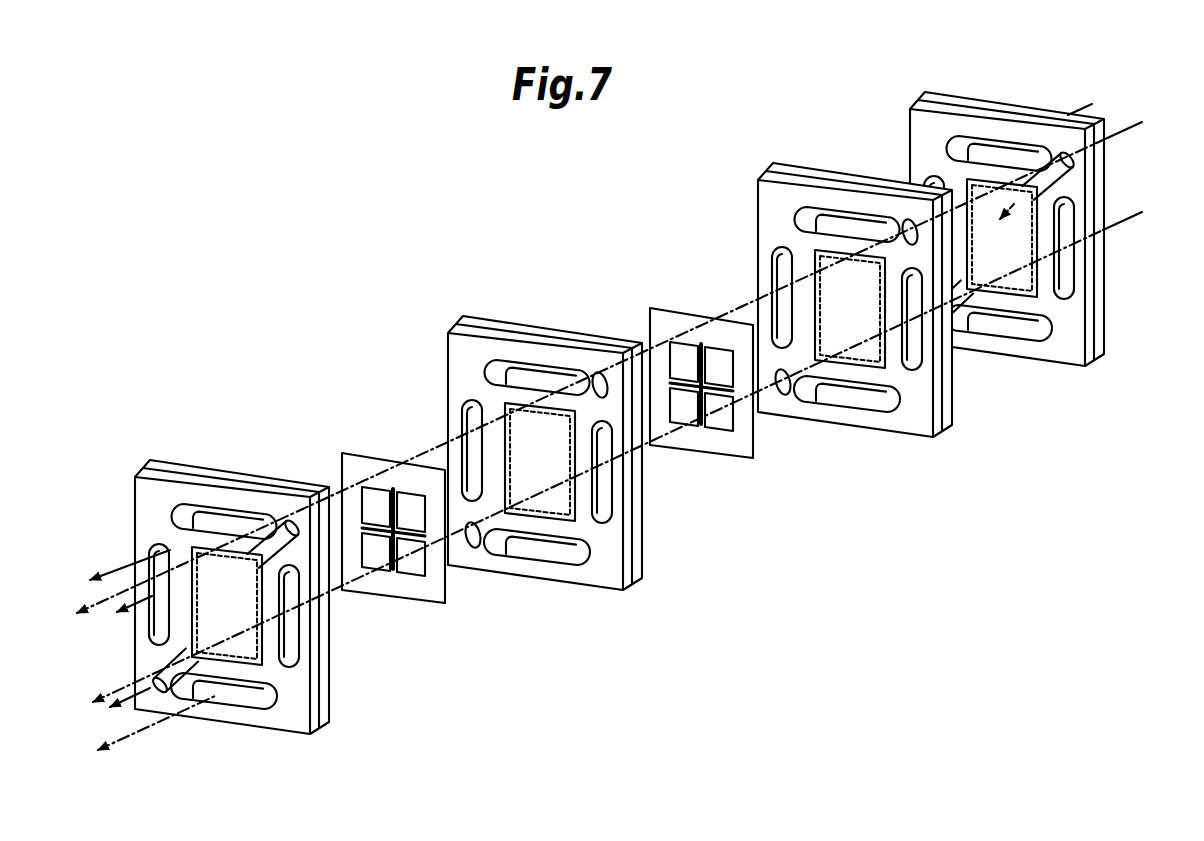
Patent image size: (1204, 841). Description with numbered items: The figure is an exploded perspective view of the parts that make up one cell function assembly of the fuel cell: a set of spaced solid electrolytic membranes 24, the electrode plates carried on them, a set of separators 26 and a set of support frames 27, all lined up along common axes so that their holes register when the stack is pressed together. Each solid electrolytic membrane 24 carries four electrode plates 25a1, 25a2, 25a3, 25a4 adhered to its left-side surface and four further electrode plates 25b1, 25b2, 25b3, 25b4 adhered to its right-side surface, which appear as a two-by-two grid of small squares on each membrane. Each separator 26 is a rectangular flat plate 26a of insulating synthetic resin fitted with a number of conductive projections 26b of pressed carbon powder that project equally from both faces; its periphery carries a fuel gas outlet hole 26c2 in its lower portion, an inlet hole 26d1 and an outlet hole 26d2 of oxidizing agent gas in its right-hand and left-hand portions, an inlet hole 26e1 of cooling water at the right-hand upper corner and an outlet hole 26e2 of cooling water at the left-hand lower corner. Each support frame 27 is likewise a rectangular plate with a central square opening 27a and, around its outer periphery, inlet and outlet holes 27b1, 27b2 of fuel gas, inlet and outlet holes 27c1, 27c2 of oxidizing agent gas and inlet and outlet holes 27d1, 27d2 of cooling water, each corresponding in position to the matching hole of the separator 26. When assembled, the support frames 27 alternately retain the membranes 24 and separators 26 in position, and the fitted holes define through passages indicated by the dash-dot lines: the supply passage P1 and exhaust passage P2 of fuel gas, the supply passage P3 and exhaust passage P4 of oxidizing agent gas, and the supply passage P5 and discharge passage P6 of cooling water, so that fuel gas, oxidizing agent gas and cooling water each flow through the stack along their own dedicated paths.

The solid electrolytic membrane 24 is at (668, 312).
The electrode plate 25a1 is at (672, 350).
The electrode plate 25a2 is at (716, 350).
The electrode plate 25a3 is at (736, 426).
The electrode plate 25a4 is at (679, 420).
The electrode plate 25b1 is at (365, 487).
The electrode plate 25b2 is at (400, 492).
The electrode plate 25b3 is at (428, 577).
The electrode plate 25b4 is at (372, 570).
The separator 26 is at (946, 100).
The flat plate 26a is at (843, 212).
The projection 26b is at (808, 392).
The fuel gas outlet hole 26c2 is at (850, 395).
The inlet hole of oxidizing agent gas 26d1 is at (930, 372).
The outlet hole of oxidizing agent gas 26d2 is at (790, 252).
The inlet hole of cooling water 26e1 is at (291, 520).
The outlet hole of cooling water 26e2 is at (165, 700).
The support frame 27 is at (1085, 368).
The square opening 27a is at (534, 515).
The inlet hole of fuel gas 27b1 is at (521, 364).
The outlet hole of fuel gas 27b2 is at (560, 558).
The inlet hole of oxidizing agent gas 27c1 is at (612, 492).
The outlet hole of oxidizing agent gas 27c2 is at (463, 410).
The inlet hole of cooling water 27d1 is at (278, 491).
The outlet hole of cooling water 27d2 is at (205, 720).
The supply passage of fuel gas P1 is at (1068, 113).
The exhaust passage of fuel gas P2 is at (120, 752).
The supply passage of oxidizing agent gas P3 is at (1130, 225).
The exhaust passage of oxidizing agent gas P4 is at (86, 606).
The supply passage of cooling water P5 is at (1120, 143).
The discharge passage of cooling water P6 is at (97, 700).